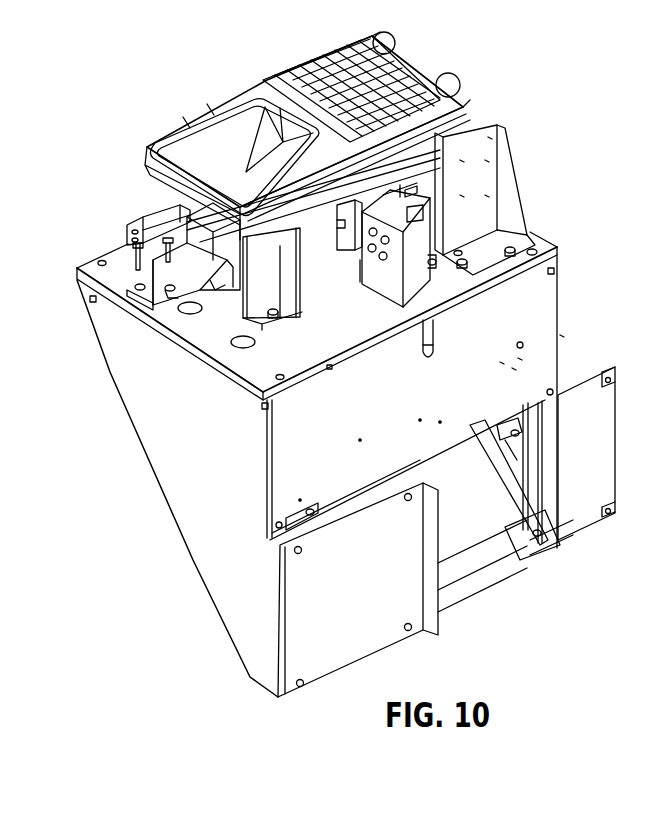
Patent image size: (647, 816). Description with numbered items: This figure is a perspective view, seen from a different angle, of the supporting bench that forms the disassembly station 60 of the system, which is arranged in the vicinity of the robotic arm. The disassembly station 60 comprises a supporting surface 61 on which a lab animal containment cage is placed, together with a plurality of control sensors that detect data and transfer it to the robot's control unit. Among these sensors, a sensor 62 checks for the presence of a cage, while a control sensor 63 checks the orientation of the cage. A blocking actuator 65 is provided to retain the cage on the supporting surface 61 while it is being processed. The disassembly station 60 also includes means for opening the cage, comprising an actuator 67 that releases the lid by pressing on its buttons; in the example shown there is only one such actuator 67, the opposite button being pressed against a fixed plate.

The disassembly station 60 is at (335, 364).
The supporting surface 61 is at (118, 268).
The sensor 62 is at (185, 265).
The control sensor 63 is at (243, 290).
The blocking actuator 65 is at (343, 241).
The actuator 67 is at (133, 218).